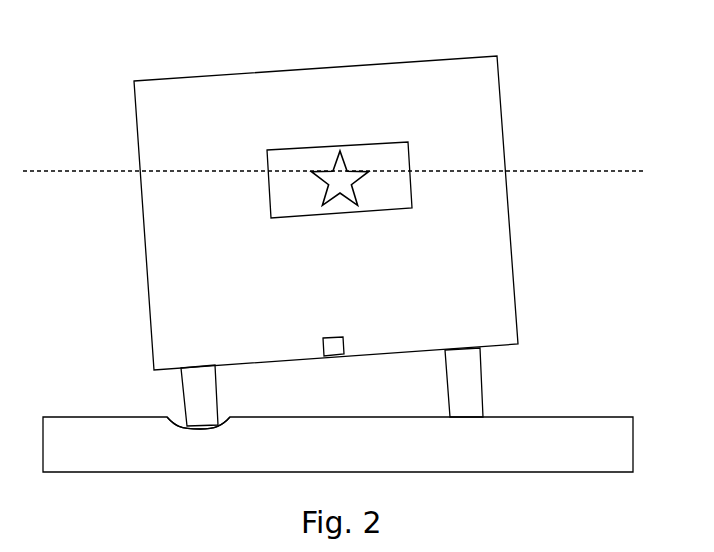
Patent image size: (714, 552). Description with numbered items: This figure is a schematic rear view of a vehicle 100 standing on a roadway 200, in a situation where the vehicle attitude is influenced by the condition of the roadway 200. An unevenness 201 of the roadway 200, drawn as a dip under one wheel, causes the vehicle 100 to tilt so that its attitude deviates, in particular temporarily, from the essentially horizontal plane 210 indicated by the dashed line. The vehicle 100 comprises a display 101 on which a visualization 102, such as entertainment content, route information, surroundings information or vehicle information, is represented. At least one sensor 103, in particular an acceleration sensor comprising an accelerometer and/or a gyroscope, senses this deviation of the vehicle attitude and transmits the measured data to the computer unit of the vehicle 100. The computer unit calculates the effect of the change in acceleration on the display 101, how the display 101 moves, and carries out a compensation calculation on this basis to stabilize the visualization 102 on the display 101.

The vehicle 100 is at (491, 128).
The display 101 is at (414, 170).
The visualization 102 is at (341, 183).
The sensor 103 is at (334, 346).
The roadway 200 is at (545, 431).
The unevenness 201 is at (197, 430).
The plane 210 is at (104, 168).